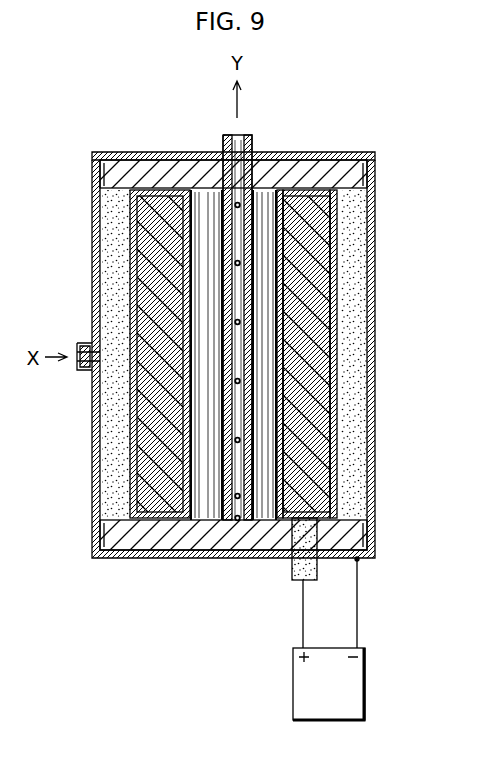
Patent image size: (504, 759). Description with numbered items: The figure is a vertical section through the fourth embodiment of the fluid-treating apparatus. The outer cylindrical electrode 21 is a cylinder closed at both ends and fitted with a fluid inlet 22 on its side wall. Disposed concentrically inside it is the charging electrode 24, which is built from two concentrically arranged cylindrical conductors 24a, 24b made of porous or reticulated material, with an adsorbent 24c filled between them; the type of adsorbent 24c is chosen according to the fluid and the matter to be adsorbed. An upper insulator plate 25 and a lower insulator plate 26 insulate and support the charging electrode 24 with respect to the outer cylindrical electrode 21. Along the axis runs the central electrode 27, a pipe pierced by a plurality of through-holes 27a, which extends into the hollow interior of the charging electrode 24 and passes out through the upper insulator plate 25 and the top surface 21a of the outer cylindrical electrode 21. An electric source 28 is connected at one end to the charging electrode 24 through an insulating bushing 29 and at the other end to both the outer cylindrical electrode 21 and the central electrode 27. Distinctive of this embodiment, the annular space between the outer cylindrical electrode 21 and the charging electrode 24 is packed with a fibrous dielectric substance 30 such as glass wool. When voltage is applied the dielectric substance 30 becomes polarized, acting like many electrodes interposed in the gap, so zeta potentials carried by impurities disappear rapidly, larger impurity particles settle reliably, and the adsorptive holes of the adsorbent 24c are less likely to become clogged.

The outer cylindrical electrode 21 is at (375, 297).
The top surface 21a is at (298, 152).
The fluid inlet 22 is at (75, 352).
The charging electrode 24 is at (302, 355).
The cylindrical conductor 24a is at (438, 444).
The cylindrical conductor 24b is at (268, 428).
The adsorbent 24c is at (317, 452).
The upper insulator plate 25 is at (372, 175).
The lower insulator plate 26 is at (370, 533).
The central electrode 27 is at (227, 398).
The through-holes 27a is at (235, 498).
The electric source 28 is at (366, 683).
The insulating bushing 29 is at (290, 574).
The dielectric substance 30 is at (352, 236).